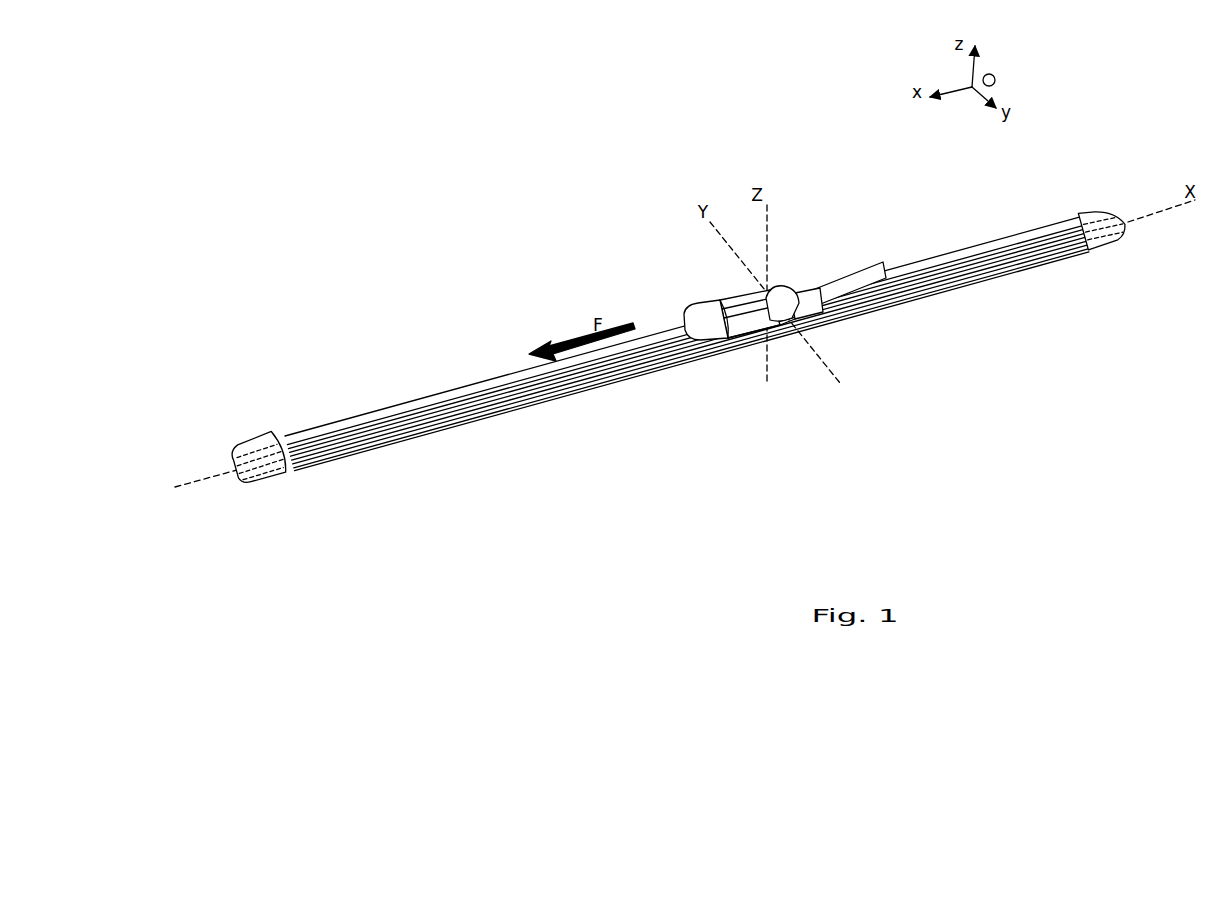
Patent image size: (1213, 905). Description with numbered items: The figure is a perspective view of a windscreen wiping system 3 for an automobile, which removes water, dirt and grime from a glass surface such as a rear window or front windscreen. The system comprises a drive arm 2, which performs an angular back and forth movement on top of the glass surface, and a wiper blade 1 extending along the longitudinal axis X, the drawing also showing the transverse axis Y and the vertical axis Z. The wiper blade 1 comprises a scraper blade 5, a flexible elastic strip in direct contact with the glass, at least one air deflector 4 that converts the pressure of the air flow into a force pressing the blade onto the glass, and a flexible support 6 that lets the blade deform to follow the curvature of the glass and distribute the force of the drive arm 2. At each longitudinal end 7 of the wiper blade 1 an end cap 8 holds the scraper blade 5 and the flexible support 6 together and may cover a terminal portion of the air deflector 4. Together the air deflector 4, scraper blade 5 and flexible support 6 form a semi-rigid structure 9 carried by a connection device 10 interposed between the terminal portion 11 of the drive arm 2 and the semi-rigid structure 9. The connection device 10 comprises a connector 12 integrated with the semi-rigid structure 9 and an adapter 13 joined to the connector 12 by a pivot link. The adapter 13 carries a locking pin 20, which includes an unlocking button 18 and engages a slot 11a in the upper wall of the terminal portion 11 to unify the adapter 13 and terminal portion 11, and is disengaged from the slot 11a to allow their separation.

The wiper blade 1 is at (935, 236).
The drive arm 2 is at (845, 280).
The windscreen wiping system 3 is at (526, 272).
The air deflector 4 is at (498, 373).
The scraper blade 5 is at (508, 413).
The flexible support 6 is at (656, 404).
The longitudinal end 7 is at (278, 494).
The end cap 8 is at (280, 437).
The semi-rigid structure 9 is at (837, 415).
The connection device 10 is at (692, 296).
The terminal portion 11 is at (745, 298).
The slot 11a is at (748, 300).
The connector 12 is at (743, 340).
The adapter 13 is at (684, 312).
The unlocking button 18 is at (791, 345).
The locking pin 20 is at (752, 294).